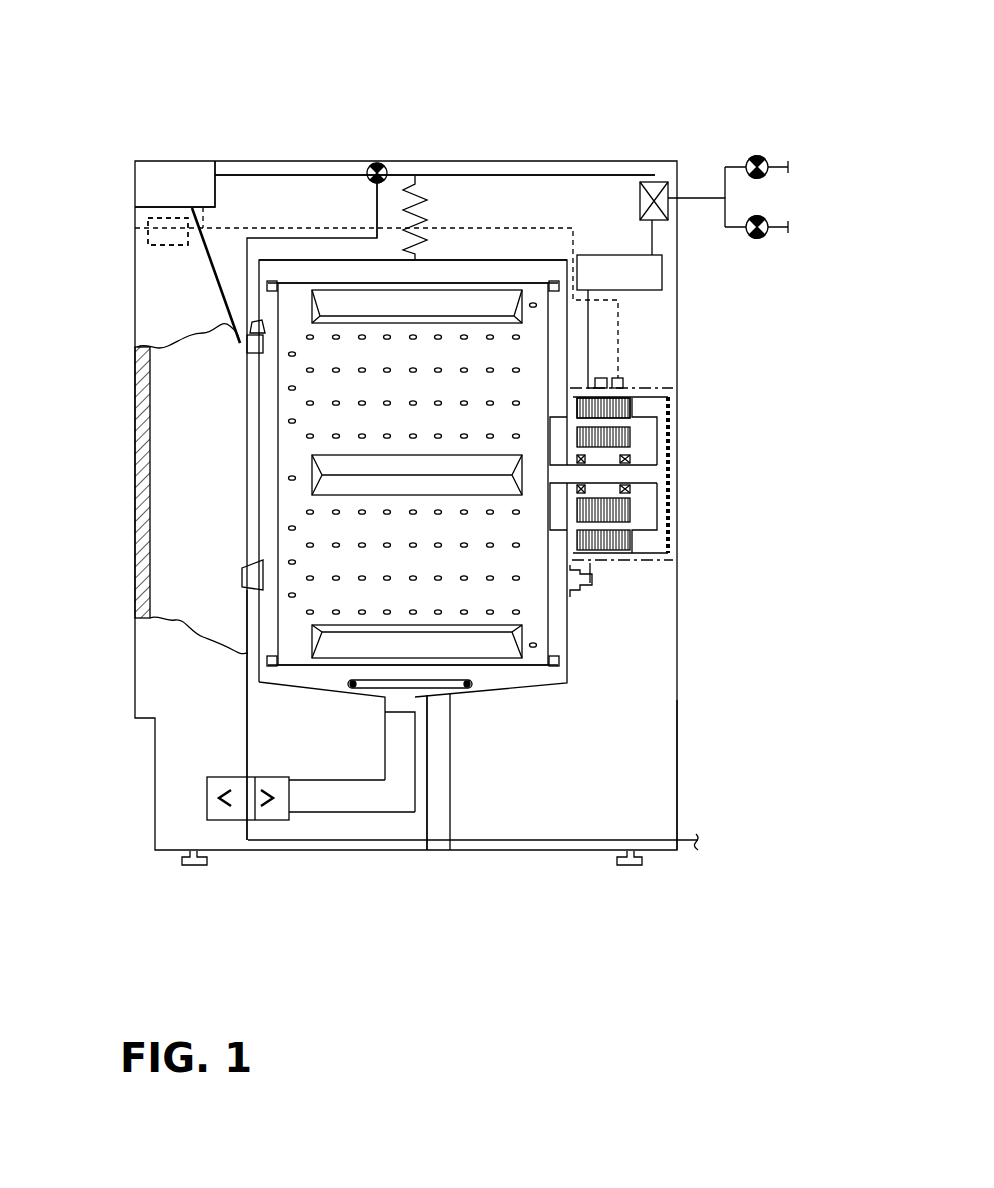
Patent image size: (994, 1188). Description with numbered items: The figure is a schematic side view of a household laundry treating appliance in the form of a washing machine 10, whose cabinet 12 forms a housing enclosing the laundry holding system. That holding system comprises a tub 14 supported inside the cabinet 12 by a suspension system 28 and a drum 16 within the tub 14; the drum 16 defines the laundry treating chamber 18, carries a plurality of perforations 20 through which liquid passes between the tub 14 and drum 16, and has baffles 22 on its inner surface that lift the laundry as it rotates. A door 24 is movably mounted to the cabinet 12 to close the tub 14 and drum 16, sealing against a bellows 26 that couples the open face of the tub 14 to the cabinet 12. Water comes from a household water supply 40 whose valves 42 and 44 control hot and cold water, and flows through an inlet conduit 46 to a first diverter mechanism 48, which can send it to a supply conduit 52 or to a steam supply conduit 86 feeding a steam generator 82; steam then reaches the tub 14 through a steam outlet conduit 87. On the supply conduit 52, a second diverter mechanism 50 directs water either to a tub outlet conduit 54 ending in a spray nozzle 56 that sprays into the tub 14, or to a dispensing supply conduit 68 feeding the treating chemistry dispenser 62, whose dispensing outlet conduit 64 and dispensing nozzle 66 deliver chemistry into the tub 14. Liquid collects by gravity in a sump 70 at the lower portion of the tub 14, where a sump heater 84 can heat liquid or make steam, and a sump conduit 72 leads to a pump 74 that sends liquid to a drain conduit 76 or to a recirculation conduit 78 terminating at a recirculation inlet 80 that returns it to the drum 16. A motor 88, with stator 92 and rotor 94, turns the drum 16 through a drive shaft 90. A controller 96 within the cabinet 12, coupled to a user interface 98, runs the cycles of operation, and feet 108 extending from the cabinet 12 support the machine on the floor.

The washing machine 10 is at (621, 28).
The cabinet 12 is at (601, 158).
The tub 14 is at (452, 258).
The drum 16 is at (343, 280).
The laundry treating chamber 18 is at (412, 396).
The perforations 20 is at (518, 369).
The baffles 22 is at (502, 647).
The door 24 is at (135, 465).
The bellows 26 is at (172, 627).
The suspension system 28 is at (403, 205).
The household water supply 40 is at (779, 150).
The hot water valve 42 is at (760, 158).
The cold water valve 44 is at (760, 240).
The inlet conduit 46 is at (698, 197).
The first diverter mechanism 48 is at (658, 182).
The second diverter mechanism 50 is at (368, 162).
The supply conduit 52 is at (533, 174).
The tub outlet conduit 54 is at (302, 235).
The spray nozzle 56 is at (256, 323).
The treating chemistry dispenser 62 is at (223, 170).
The dispensing outlet conduit 64 is at (207, 260).
The dispensing nozzle 66 is at (253, 350).
The dispensing supply conduit 68 is at (350, 170).
The sump 70 is at (440, 763).
The sump conduit 72 is at (395, 792).
The pump 74 is at (228, 826).
The drain conduit 76 is at (684, 842).
The recirculation conduit 78 is at (247, 722).
The recirculation inlet 80 is at (253, 577).
The steam generator 82 is at (663, 275).
The sump heater 84 is at (460, 708).
The steam supply conduit 86 is at (654, 226).
The steam outlet conduit 87 is at (592, 578).
The motor 88 is at (672, 390).
The drive shaft 90 is at (642, 477).
The stator 92 is at (623, 403).
The rotor 94 is at (624, 436).
The controller 96 is at (165, 256).
The user interface 98 is at (130, 232).
The feet 108 is at (190, 863).